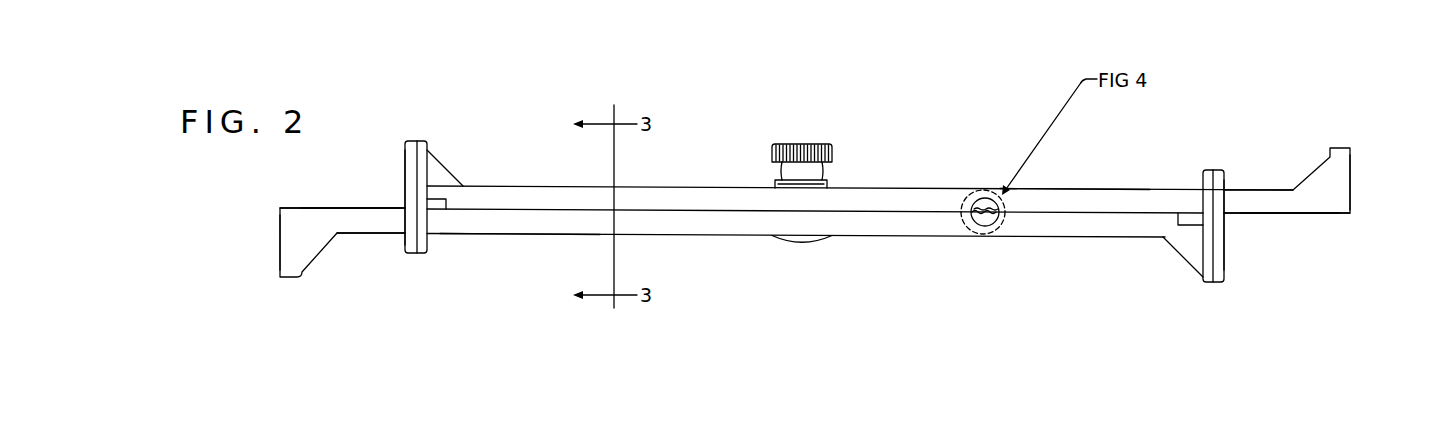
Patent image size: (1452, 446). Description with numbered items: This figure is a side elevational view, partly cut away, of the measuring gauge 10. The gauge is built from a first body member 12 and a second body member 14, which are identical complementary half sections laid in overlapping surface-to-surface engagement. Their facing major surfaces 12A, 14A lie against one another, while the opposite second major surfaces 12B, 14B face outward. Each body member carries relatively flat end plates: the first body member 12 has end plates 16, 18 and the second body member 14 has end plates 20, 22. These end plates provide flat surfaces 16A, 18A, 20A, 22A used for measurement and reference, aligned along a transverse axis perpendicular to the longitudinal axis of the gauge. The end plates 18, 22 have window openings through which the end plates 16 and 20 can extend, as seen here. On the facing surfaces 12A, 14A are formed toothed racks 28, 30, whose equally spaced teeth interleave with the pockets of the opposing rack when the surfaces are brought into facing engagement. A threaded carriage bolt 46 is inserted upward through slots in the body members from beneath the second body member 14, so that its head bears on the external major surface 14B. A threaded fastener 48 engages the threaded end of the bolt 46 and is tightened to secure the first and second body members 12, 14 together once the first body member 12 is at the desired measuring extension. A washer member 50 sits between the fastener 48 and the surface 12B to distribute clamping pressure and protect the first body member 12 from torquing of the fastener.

The measuring gauge 10 is at (895, 93).
The first body member 12 is at (898, 195).
The major surface of first body member 12A is at (1288, 215).
The second major surface of first body member 12B is at (1072, 187).
The second body member 14 is at (900, 230).
The major surface of second body member 14A is at (357, 208).
The second major surface of second body member 14B is at (485, 237).
The end plate 16 is at (1338, 158).
The flat surface of end plate 16A is at (1353, 180).
The end plate 18 is at (413, 139).
The flat surface of end plate 18A is at (405, 162).
The end plate 20 is at (287, 258).
The flat surface of end plate 20A is at (280, 244).
The end plate 22 is at (1217, 262).
The flat surface of end plate 22A is at (1225, 238).
The toothed rack 28 is at (990, 227).
The toothed rack 30 is at (980, 203).
The threaded carriage bolt 46 is at (807, 242).
The threaded fastener 48 is at (772, 152).
The washer member 50 is at (775, 183).